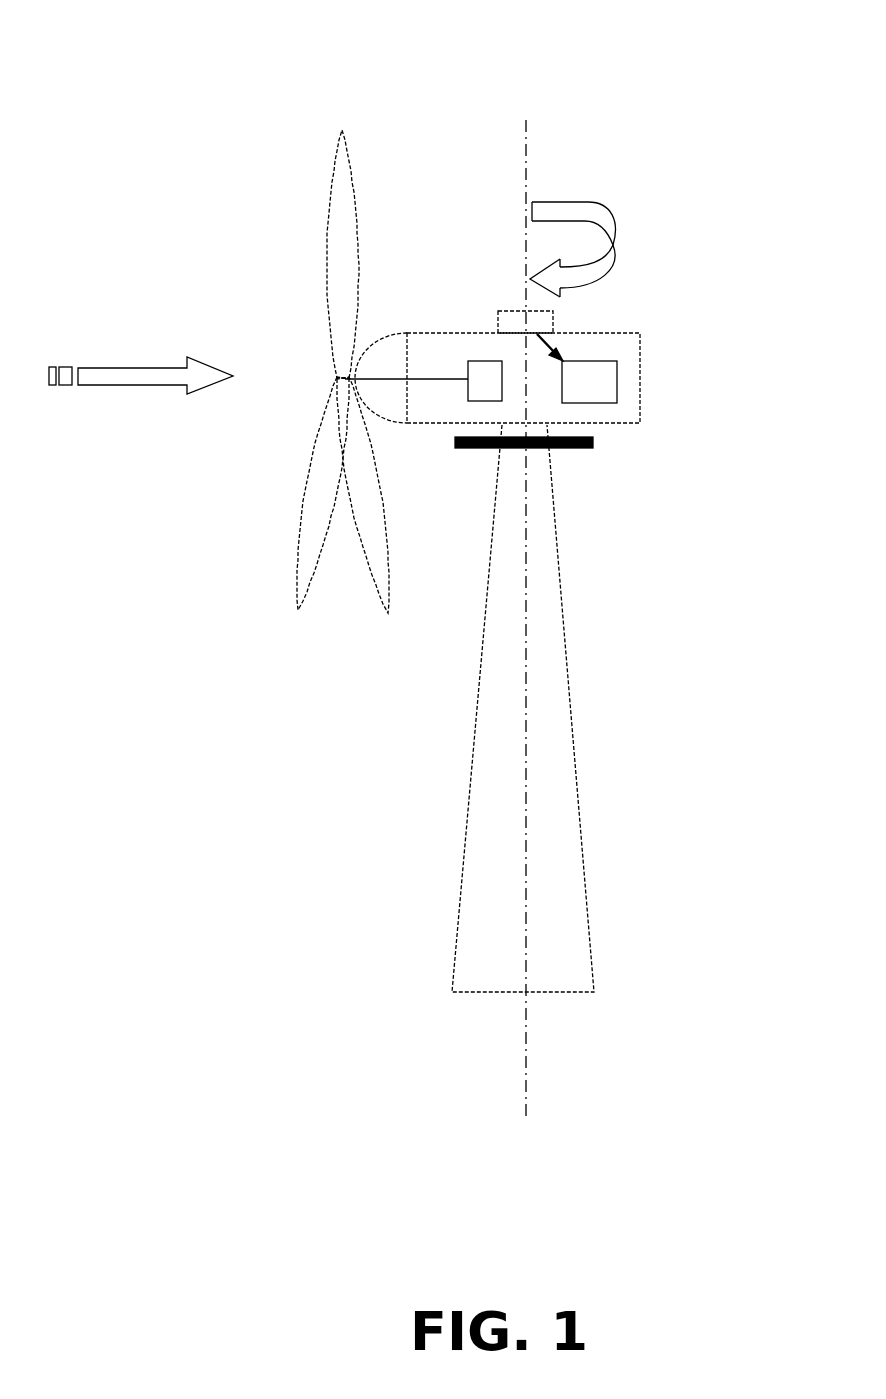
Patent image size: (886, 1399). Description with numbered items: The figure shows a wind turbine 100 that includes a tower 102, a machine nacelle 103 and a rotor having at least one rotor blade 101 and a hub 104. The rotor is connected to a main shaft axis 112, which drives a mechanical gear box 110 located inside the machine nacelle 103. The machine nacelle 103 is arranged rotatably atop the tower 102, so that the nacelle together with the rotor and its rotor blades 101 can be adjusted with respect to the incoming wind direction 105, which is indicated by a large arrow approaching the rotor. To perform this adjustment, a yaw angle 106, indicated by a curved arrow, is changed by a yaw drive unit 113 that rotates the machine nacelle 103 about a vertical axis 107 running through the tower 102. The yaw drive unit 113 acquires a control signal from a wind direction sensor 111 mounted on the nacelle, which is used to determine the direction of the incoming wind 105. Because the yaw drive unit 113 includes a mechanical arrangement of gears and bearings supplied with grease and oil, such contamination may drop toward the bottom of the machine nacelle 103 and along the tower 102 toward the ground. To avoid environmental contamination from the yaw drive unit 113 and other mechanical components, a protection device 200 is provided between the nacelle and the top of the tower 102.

The wind turbine 100 is at (718, 92).
The rotor blade 101 is at (328, 276).
The tower 102 is at (573, 744).
The machine nacelle 103 is at (640, 383).
The hub 104 is at (389, 337).
The incoming wind direction 105 is at (187, 393).
The yaw angle 106 is at (617, 243).
The vertical axis 107 is at (526, 118).
The mechanical gear box 110 is at (485, 402).
The wind direction sensor 111 is at (548, 317).
The main shaft axis 112 is at (424, 379).
The yaw drive unit 113 is at (598, 387).
The protection device 200 is at (572, 448).